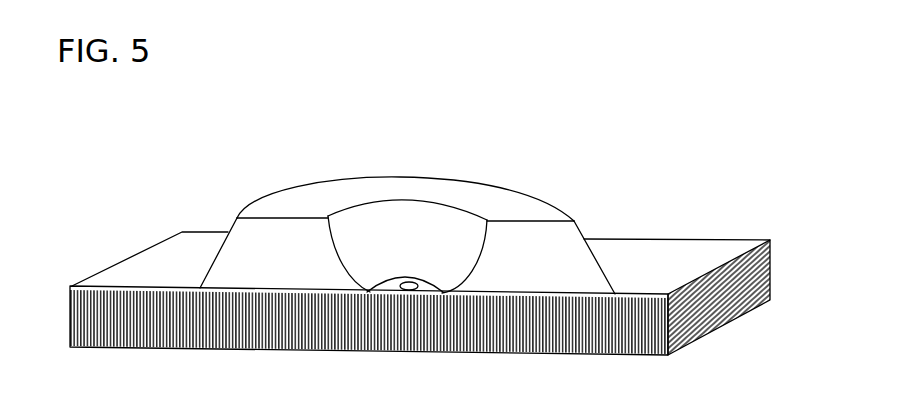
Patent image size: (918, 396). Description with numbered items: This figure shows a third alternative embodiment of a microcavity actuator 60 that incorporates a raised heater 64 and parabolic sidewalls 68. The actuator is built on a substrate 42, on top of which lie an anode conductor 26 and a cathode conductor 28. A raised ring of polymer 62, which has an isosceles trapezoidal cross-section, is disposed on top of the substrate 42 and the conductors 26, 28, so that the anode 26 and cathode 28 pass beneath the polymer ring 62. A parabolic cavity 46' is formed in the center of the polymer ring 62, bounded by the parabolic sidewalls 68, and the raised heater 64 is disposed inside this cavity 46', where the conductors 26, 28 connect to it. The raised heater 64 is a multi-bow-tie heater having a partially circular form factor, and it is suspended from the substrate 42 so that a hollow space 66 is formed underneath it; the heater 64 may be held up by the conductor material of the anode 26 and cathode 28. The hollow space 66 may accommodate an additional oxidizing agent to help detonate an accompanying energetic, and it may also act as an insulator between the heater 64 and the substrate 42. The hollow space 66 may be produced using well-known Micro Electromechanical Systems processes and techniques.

The anode conductor 26 is at (78, 286).
The cathode conductor 28 is at (646, 294).
The substrate 42 is at (340, 339).
The parabolic cavity 46' is at (387, 239).
The microcavity actuator 60 is at (485, 166).
The raised ring of polymer 62 is at (294, 271).
The raised heater 64 is at (400, 273).
The hollow space 66 is at (418, 297).
The parabolic sidewalls 68 is at (478, 264).